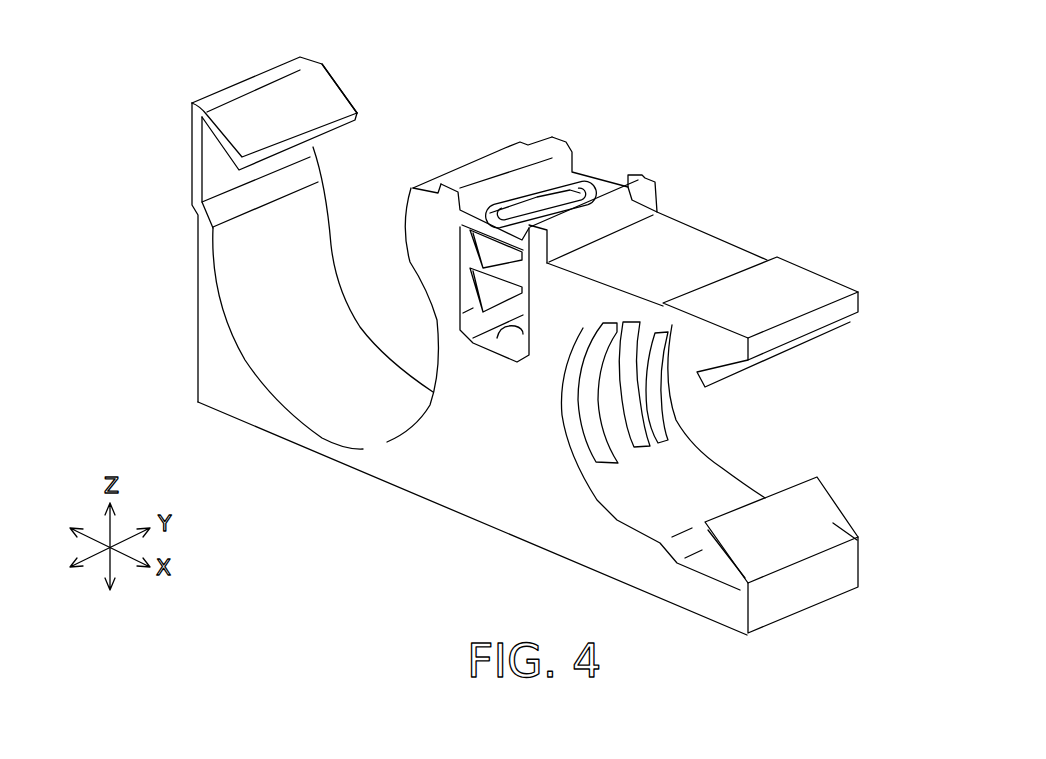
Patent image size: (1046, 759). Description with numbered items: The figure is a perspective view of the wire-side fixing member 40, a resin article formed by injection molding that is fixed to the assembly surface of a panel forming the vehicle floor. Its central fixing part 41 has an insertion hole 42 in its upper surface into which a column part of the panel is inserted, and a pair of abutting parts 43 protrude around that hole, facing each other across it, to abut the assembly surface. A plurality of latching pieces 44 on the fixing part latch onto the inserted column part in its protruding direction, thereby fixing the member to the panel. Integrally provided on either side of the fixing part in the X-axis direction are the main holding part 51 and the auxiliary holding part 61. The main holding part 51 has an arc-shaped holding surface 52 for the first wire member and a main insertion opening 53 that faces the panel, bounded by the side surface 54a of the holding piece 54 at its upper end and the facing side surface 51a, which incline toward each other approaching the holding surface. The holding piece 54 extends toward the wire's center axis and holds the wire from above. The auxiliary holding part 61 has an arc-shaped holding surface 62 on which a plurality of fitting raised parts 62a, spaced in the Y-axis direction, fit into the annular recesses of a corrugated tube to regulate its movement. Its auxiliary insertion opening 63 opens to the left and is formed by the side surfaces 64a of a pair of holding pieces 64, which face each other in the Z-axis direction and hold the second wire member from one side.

The wire-side fixing member 40 is at (717, 134).
The fixing part 41 is at (550, 167).
The insertion hole 42 is at (583, 190).
The abutting parts 43 is at (517, 167).
The latching pieces 44 is at (485, 248).
The main holding part 51 is at (174, 246).
The side surface of the main holding part 51a is at (410, 190).
The holding surface 52 is at (243, 310).
The main insertion opening 53 is at (402, 154).
The holding piece 54 is at (353, 96).
The side surface of the holding piece 54a is at (323, 90).
The auxiliary holding part 61 is at (753, 237).
The holding surface 62 is at (690, 460).
The fitting raised parts 62a is at (675, 417).
The auxiliary insertion opening 63 is at (818, 433).
The holding pieces 64 is at (842, 328).
The side surfaces of the holding pieces 64a is at (797, 350).